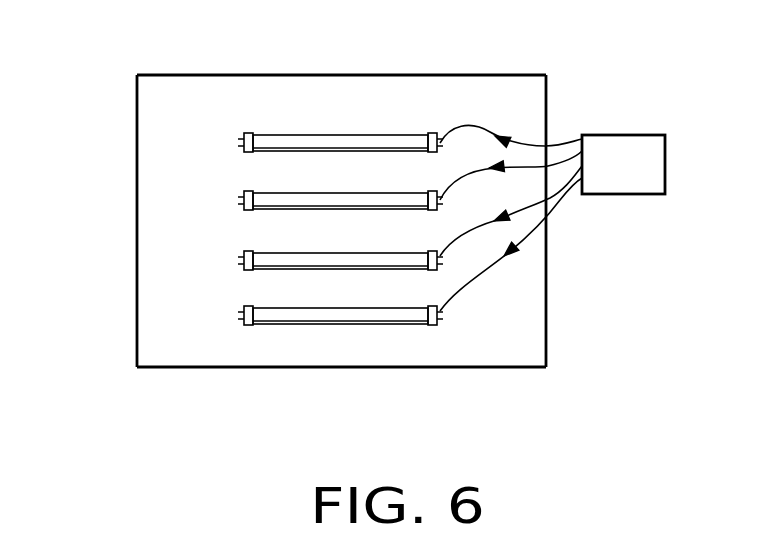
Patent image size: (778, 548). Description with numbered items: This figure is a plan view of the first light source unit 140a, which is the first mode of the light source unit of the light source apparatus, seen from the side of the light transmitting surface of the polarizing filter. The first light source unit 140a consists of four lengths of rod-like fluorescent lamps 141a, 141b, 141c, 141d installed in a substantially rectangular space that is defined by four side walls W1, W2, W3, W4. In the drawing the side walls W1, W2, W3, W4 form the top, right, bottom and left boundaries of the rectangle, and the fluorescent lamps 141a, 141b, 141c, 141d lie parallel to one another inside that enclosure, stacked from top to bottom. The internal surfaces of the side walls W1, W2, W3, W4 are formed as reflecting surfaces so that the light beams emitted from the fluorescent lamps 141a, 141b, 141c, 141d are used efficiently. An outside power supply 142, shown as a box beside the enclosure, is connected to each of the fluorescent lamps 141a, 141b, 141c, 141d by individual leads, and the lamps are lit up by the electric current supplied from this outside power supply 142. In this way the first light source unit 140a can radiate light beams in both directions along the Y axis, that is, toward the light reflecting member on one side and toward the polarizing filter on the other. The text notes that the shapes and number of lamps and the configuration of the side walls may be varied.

The first light source unit 140a is at (385, 28).
The fluorescent lamp 141a is at (267, 135).
The fluorescent lamp 141b is at (267, 193).
The fluorescent lamp 141c is at (267, 253).
The fluorescent lamp 141d is at (267, 308).
The outside power supply 142 is at (622, 178).
The side wall W1 is at (503, 76).
The side wall W2 is at (546, 305).
The side wall W3 is at (346, 368).
The side wall W4 is at (137, 247).